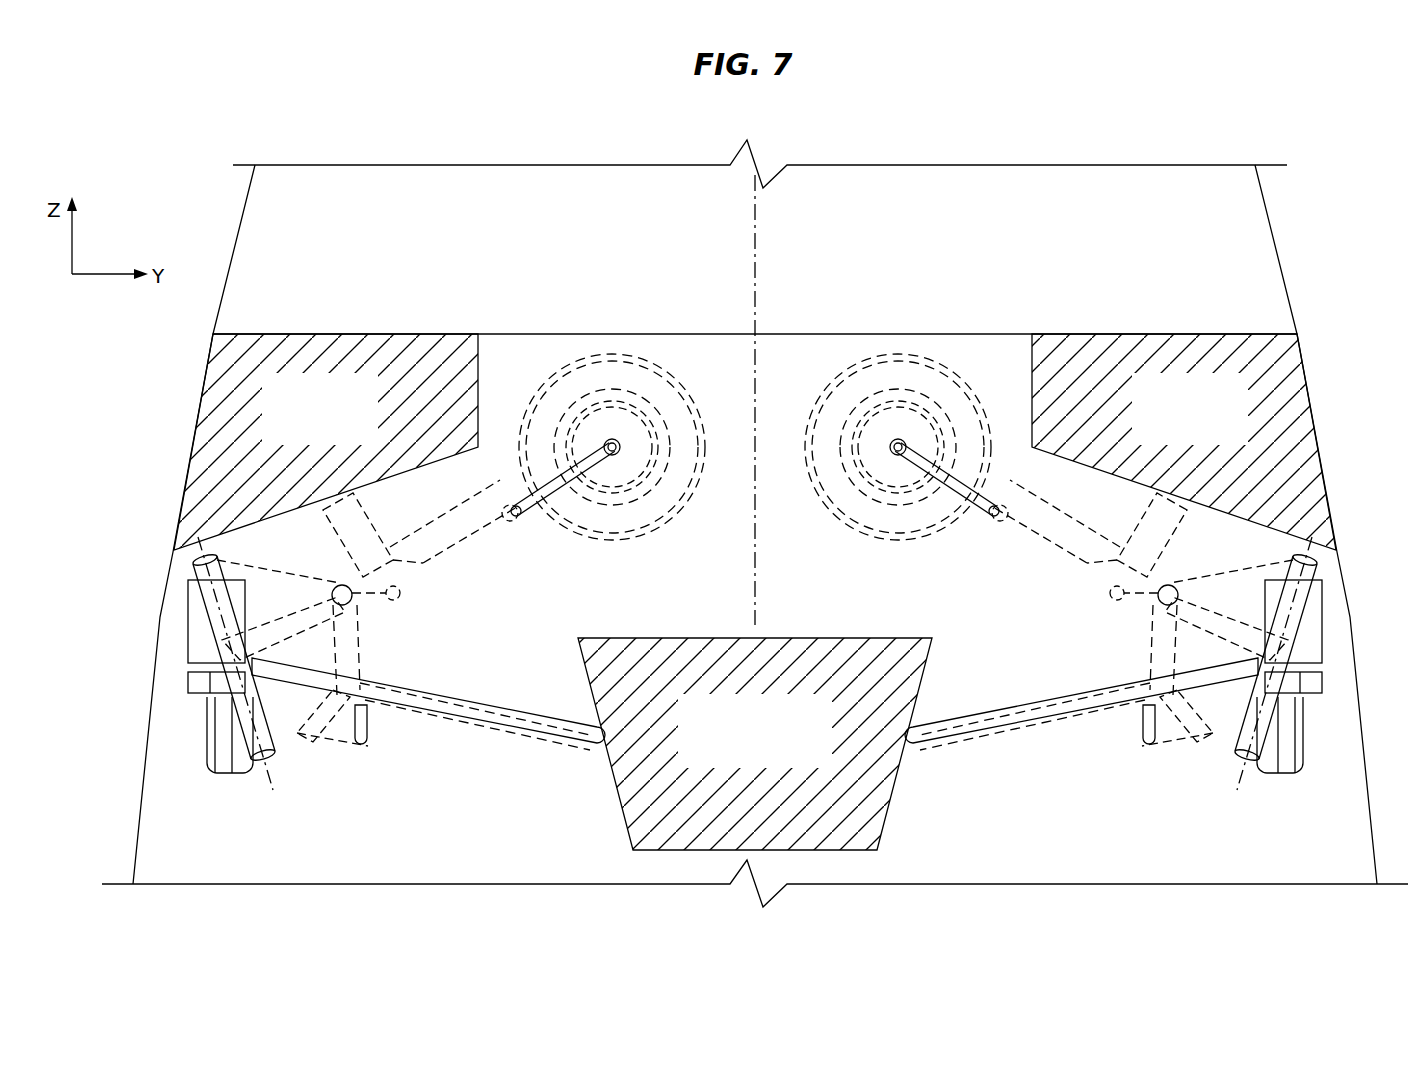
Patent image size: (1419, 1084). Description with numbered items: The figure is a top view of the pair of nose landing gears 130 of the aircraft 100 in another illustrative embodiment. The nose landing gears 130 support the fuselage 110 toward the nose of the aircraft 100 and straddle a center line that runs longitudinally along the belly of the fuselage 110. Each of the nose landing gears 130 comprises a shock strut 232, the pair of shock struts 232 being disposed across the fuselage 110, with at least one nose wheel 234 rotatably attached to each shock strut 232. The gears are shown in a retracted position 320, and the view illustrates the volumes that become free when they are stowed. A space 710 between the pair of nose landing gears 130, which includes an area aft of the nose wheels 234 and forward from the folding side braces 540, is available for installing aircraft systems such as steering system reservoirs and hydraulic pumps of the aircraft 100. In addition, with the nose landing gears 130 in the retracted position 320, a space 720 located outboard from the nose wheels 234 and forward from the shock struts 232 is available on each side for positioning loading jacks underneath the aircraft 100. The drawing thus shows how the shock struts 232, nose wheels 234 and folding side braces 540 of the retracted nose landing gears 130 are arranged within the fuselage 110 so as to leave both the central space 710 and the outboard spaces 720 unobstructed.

The aircraft 100 is at (1226, 104).
The fuselage 110 is at (160, 628).
The nose landing gears 130 is at (548, 325).
The shock struts 232 is at (370, 603).
The nose wheel 234 is at (648, 533).
The retracted position 320 is at (683, 350).
The folding side braces 540 is at (472, 695).
The space 710 is at (880, 800).
The space 720 is at (220, 368).